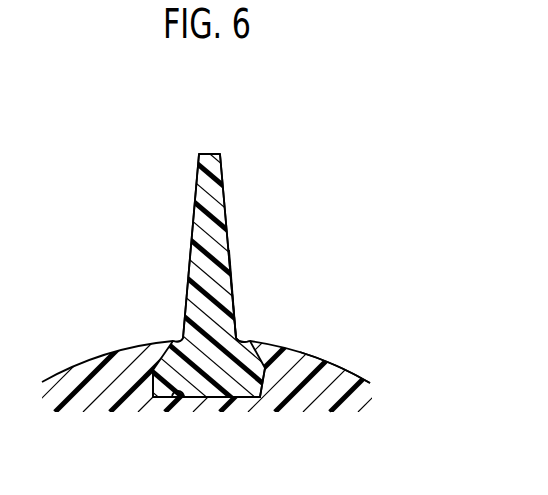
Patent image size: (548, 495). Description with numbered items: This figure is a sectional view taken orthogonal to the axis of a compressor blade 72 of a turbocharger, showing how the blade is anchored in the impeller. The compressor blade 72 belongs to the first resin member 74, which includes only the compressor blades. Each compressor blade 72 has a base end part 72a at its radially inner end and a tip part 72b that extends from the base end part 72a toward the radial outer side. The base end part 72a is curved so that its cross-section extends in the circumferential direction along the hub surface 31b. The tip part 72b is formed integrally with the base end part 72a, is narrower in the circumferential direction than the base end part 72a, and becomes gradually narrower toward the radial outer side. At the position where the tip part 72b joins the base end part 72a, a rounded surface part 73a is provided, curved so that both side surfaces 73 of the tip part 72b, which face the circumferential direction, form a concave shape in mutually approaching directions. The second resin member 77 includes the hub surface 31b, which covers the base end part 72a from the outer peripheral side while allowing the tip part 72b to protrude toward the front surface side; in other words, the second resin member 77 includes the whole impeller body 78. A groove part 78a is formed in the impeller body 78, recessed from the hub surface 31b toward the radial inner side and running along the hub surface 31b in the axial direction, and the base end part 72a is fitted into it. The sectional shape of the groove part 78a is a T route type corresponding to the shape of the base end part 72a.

The hub surface 31b is at (318, 353).
The compressor blade 72 is at (212, 166).
The base end part 72a is at (241, 399).
The tip part 72b is at (221, 291).
The side surfaces 73 is at (192, 212).
The rounded surface part 73a is at (176, 362).
The first resin member 74 is at (205, 182).
The second resin member 77 is at (342, 404).
The impeller body 78 is at (372, 406).
The groove part 78a is at (173, 404).